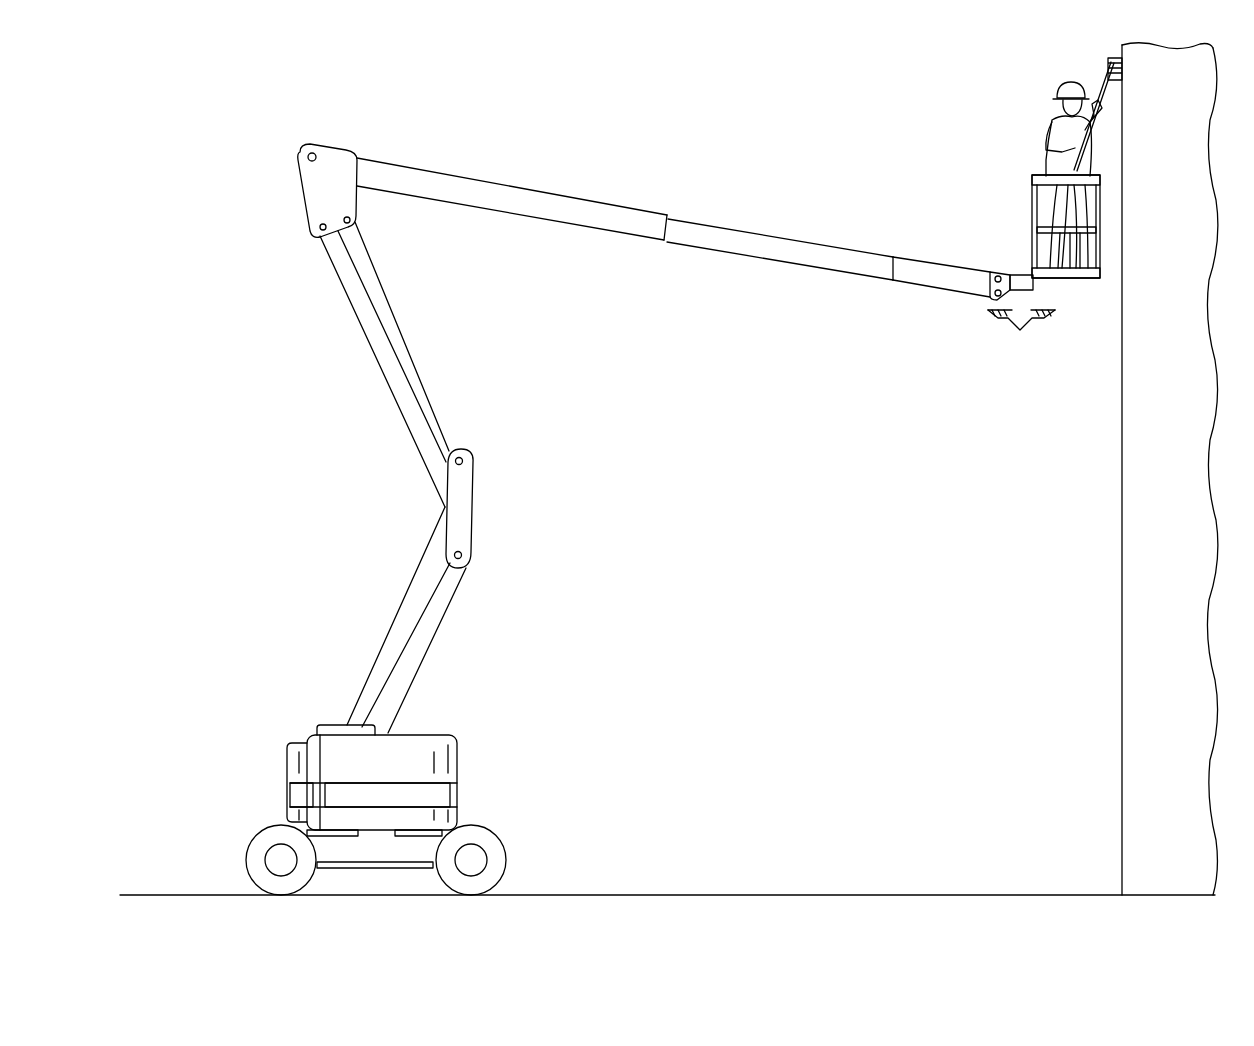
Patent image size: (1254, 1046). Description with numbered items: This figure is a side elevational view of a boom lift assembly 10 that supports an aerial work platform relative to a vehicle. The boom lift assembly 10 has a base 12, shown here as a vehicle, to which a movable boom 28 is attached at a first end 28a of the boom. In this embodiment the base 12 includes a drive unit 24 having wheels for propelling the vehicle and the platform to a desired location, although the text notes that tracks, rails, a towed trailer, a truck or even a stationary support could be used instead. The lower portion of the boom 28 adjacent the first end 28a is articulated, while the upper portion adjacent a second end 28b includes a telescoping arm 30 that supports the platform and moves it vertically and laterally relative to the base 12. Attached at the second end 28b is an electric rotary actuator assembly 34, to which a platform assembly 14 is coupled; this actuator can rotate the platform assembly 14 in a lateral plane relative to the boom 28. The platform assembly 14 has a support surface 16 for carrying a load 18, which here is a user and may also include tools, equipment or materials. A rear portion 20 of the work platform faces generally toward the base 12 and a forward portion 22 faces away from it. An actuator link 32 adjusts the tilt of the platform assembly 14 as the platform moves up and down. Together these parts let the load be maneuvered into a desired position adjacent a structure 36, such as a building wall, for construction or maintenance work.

The boom lift assembly 10 is at (280, 112).
The base 12 is at (492, 712).
The platform assembly 14 is at (1003, 120).
The support surface 16 is at (1076, 279).
The load 18 is at (1058, 90).
The rear portion 20 is at (1033, 252).
The forward portion 22 is at (1100, 208).
The drive unit 24 is at (428, 733).
The movable boom 28 is at (480, 519).
The first end 28a is at (402, 626).
The second end 28b is at (913, 262).
The telescoping arm 30 is at (661, 260).
The actuator link 32 is at (985, 290).
The electric rotary actuator assembly 34 is at (1021, 336).
The structure 36 is at (1122, 520).